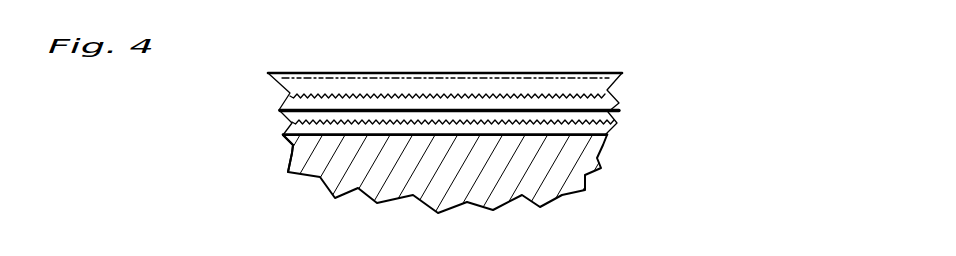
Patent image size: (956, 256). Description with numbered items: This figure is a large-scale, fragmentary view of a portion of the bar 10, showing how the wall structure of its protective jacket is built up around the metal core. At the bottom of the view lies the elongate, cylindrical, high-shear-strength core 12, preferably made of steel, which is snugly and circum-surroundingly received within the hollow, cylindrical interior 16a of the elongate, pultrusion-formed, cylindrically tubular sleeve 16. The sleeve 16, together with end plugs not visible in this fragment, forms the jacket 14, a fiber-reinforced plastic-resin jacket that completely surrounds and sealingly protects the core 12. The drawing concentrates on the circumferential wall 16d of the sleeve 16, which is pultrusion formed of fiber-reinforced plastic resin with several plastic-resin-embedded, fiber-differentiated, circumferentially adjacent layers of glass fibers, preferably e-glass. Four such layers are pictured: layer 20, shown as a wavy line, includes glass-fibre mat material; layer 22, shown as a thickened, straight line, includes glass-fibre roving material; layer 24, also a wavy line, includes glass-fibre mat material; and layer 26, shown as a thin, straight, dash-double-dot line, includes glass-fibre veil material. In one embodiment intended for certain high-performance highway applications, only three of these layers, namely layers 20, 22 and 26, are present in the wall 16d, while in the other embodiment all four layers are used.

The bar 10 is at (578, 25).
The core 12 is at (578, 157).
The jacket 14 is at (462, 70).
The sleeve 16 is at (384, 73).
The interior of sleeve 16a is at (305, 136).
The circumferential wall 16d is at (598, 85).
The layer 20 is at (608, 135).
The layer 22 is at (291, 124).
The layer 24 is at (612, 110).
The layer 26 is at (283, 95).